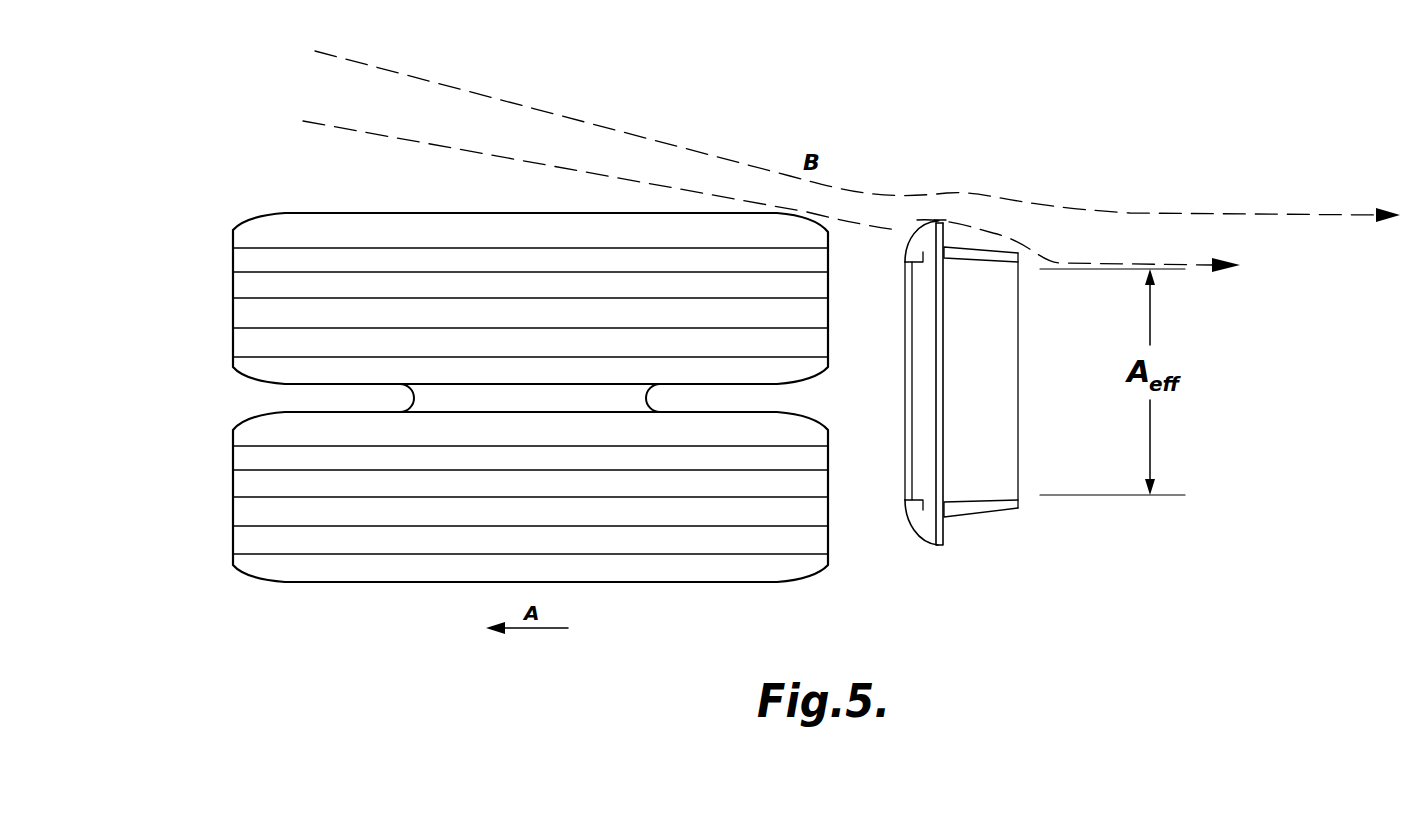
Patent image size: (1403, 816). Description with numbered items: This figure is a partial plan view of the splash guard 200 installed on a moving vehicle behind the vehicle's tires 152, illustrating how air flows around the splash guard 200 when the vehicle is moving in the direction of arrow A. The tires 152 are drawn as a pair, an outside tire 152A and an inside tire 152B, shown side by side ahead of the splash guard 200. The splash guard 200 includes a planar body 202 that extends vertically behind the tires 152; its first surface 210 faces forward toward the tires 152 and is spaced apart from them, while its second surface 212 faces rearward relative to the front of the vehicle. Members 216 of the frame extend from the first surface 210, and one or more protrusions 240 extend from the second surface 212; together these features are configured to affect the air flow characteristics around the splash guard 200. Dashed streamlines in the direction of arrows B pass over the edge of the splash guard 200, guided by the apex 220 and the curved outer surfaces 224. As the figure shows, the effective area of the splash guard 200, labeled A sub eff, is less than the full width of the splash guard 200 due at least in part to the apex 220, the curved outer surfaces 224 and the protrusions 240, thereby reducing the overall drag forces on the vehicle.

The tires 152 is at (200, 386).
The outside tire 152A is at (240, 288).
The inside tire 152B is at (240, 510).
The splash guard 200 is at (970, 559).
The planar body 202 is at (937, 402).
The first surface 210 is at (937, 364).
The second surface 212 is at (945, 383).
The members 216 is at (923, 262).
The apex 220 is at (905, 256).
The curved outer surfaces 224 is at (922, 236).
The protrusions 240 is at (993, 513).